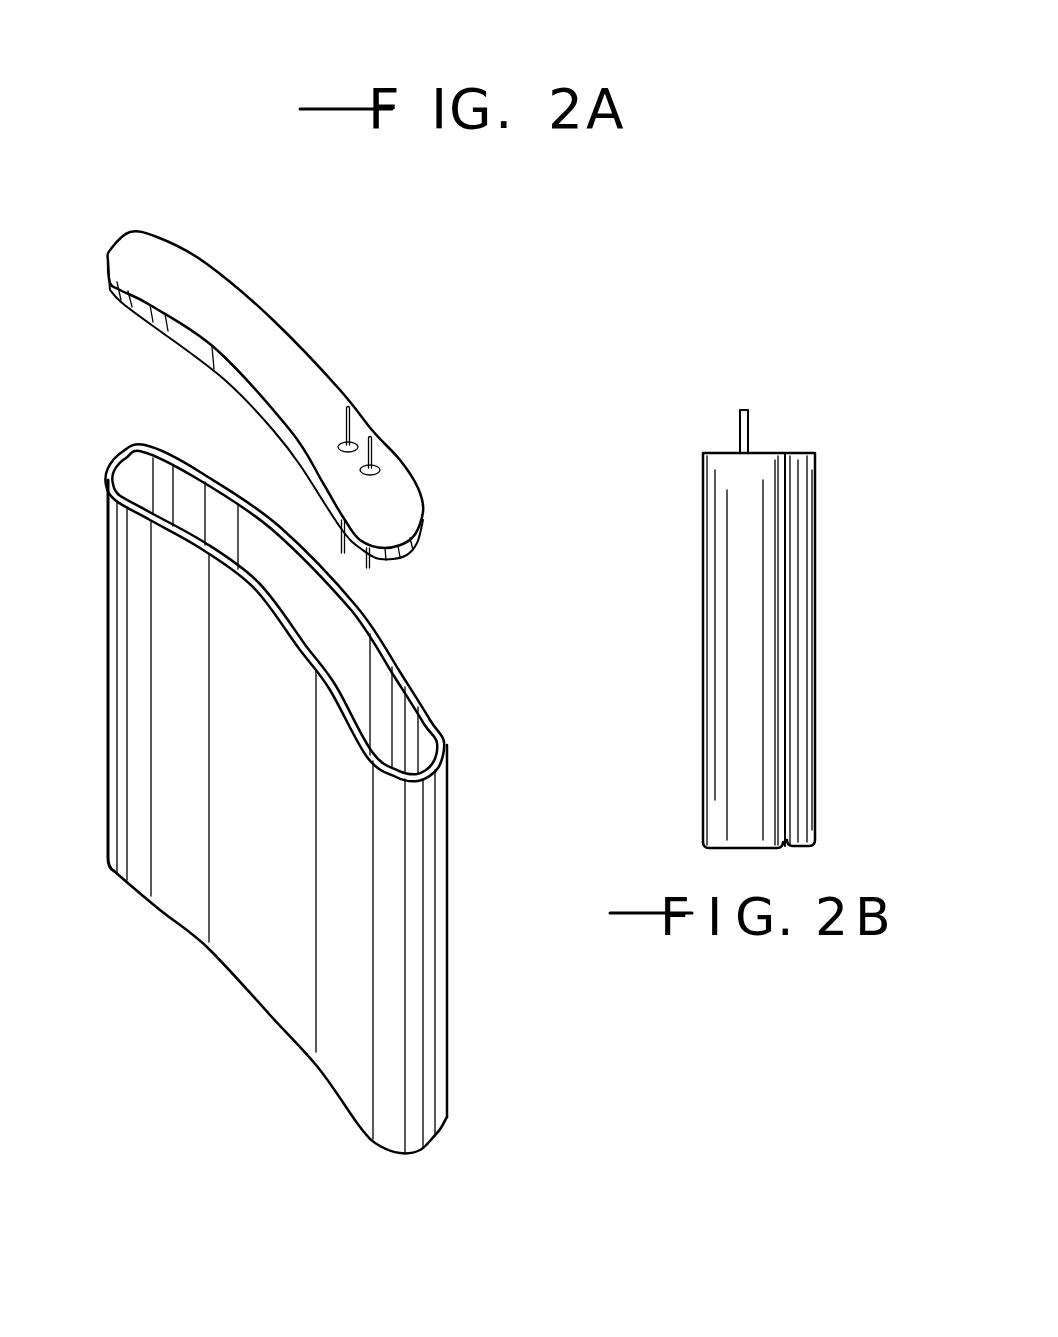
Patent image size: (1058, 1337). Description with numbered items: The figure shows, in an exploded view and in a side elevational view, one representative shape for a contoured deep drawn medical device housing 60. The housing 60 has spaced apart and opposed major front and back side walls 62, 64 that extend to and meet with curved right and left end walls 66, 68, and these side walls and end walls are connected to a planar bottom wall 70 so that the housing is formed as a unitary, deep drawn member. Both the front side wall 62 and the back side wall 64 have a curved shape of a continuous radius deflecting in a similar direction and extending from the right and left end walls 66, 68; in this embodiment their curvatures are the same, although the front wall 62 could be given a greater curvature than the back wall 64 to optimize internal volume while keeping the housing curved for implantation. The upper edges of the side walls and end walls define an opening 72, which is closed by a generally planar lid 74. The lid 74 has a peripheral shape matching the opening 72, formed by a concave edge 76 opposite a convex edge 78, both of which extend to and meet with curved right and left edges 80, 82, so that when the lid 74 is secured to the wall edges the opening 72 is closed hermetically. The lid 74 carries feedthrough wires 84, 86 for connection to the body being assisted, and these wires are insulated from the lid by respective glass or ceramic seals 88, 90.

In FIG. 2A, the housing 60 is at (440, 333).
In FIG. 2A, the front side wall 62 is at (167, 745).
In FIG. 2A, the back side wall 64 is at (347, 637).
In FIG. 2B, the back side wall 64 is at (795, 510).
In FIG. 2A, the right end wall 66 is at (415, 827).
In FIG. 2B, the right end wall 66 is at (752, 588).
In FIG. 2A, the left end wall 68 is at (132, 483).
In FIG. 2A, the bottom wall 70 is at (322, 1073).
In FIG. 2B, the bottom wall 70 is at (767, 848).
In FIG. 2A, the opening 72 is at (383, 710).
In FIG. 2A, the lid 74 is at (278, 347).
In FIG. 2A, the concave edge 76 is at (158, 322).
In FIG. 2A, the convex edge 78 is at (197, 255).
In FIG. 2A, the right edge 80 is at (413, 557).
In FIG. 2A, the left edge 82 is at (115, 240).
In FIG. 2A, the feedthrough wire 84 is at (377, 450).
In FIG. 2B, the feedthrough wire 84 is at (748, 423).
In FIG. 2A, the feedthrough wire 86 is at (357, 417).
In FIG. 2A, the seal 88 is at (380, 470).
In FIG. 2A, the seal 90 is at (343, 443).